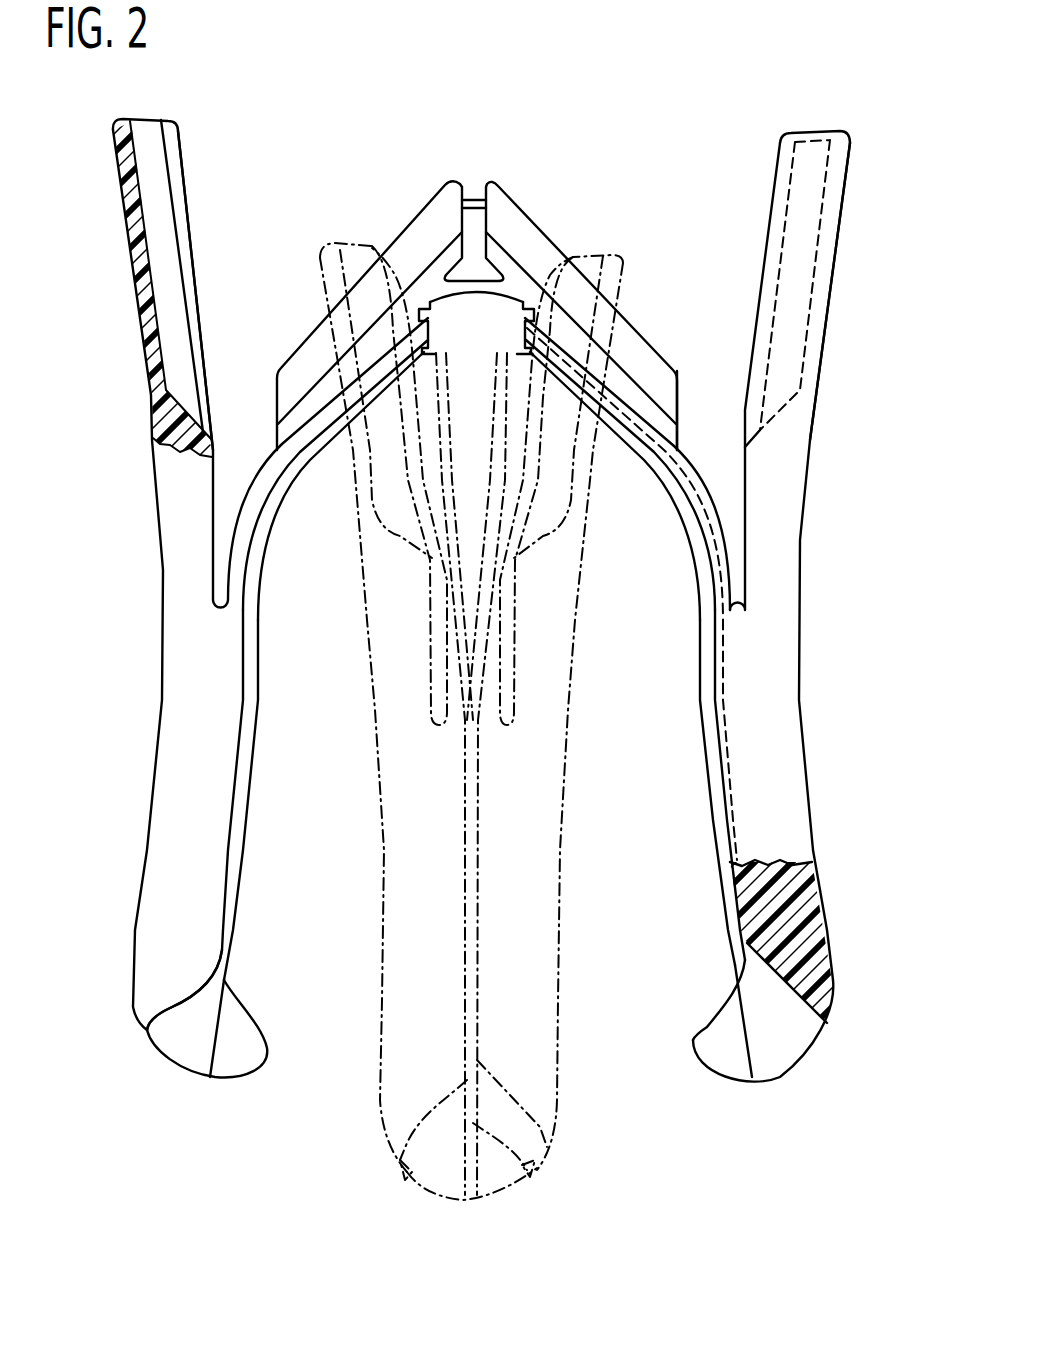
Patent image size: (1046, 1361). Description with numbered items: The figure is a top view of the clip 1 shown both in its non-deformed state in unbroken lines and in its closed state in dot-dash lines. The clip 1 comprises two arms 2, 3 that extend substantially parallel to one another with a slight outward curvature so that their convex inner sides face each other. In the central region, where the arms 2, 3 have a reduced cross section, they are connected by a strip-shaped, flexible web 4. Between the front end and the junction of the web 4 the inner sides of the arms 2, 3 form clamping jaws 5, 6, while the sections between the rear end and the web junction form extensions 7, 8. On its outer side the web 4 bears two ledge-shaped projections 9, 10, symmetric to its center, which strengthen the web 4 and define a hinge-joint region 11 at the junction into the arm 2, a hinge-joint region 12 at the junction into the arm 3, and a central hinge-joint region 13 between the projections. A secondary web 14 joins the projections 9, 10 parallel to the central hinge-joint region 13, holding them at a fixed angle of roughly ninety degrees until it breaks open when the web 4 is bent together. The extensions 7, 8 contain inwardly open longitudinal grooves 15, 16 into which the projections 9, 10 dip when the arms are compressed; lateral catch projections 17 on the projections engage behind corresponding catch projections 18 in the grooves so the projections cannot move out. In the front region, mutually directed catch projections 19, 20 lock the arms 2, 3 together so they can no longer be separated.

The clip 1 is at (876, 487).
The arm 2 is at (143, 697).
The arm 3 is at (819, 686).
The web 4 is at (622, 448).
The clamping jaw 5 is at (243, 743).
The clamping jaw 6 is at (717, 717).
The extension 7 is at (130, 227).
The extension 8 is at (823, 237).
The ledge-shaped projection 9 is at (407, 243).
The ledge-shaped projection 10 is at (513, 222).
The hinge-joint region 11 is at (253, 505).
The hinge-joint region 12 is at (697, 503).
The central hinge-joint region 13 is at (473, 287).
The secondary web 14 is at (478, 197).
The longitudinal groove 15 is at (158, 195).
The longitudinal groove 16 is at (795, 182).
The lateral catch projection 17 is at (530, 270).
The catch projection 18 is at (175, 243).
The catch projection 19 is at (253, 1063).
The catch projection 20 is at (713, 1070).